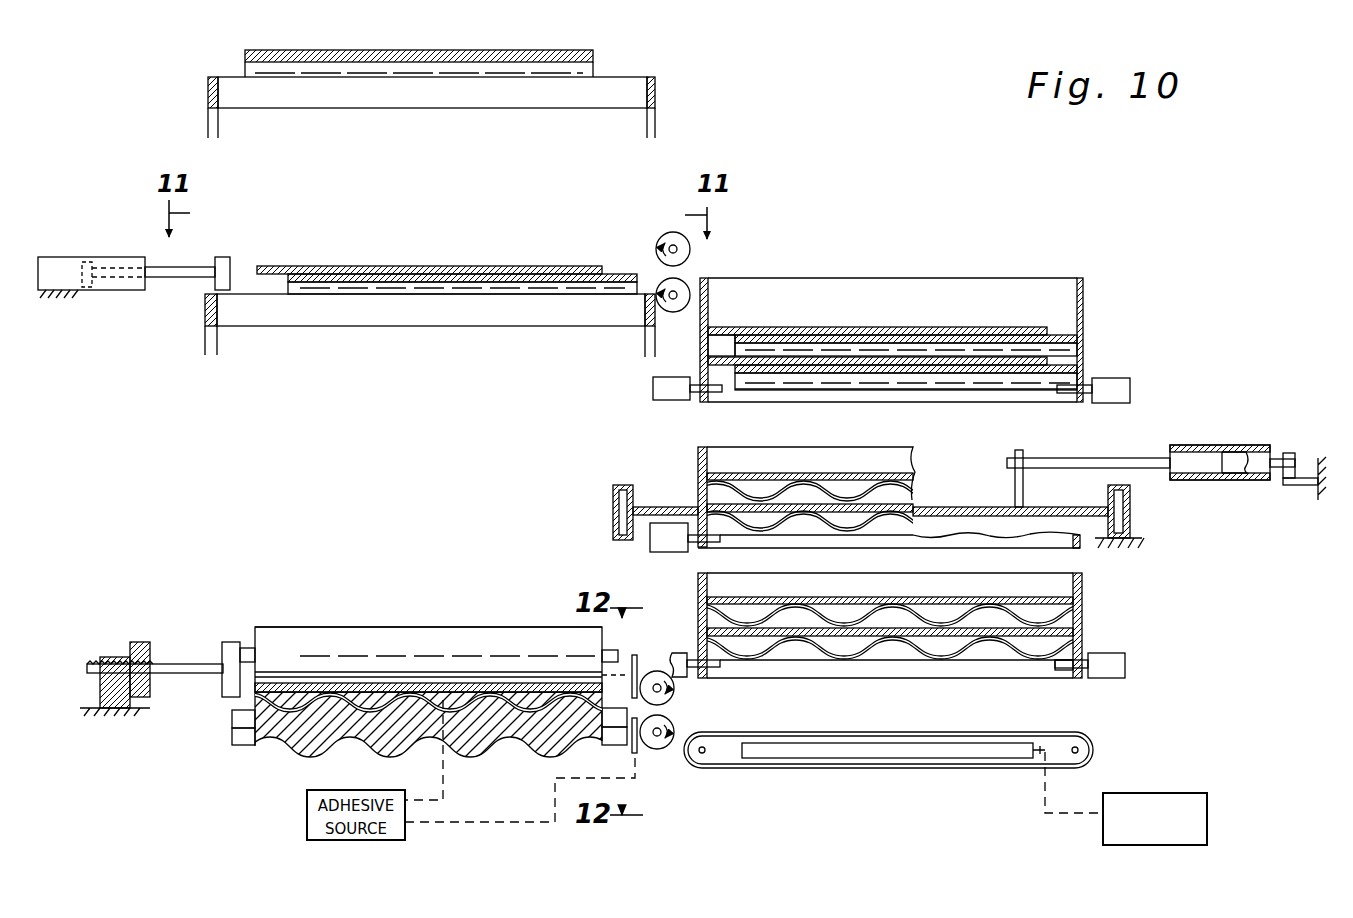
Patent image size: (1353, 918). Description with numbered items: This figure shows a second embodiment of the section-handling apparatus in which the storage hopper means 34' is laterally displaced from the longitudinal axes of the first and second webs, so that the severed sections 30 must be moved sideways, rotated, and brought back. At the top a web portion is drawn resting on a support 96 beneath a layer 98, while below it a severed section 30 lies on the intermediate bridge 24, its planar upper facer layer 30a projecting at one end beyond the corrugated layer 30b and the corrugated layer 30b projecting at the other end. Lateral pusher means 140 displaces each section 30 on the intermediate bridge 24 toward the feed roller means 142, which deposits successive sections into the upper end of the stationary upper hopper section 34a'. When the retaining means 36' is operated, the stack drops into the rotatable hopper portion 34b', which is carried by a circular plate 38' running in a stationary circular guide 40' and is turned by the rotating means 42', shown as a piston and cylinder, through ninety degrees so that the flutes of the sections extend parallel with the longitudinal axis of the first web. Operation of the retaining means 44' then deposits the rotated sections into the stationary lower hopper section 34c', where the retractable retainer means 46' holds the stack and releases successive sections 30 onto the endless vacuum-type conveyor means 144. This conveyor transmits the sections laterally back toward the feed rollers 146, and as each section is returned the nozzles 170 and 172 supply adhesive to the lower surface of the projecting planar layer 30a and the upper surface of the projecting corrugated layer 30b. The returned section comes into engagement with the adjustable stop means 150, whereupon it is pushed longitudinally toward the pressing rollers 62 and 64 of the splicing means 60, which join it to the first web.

The web sheet 98 is at (437, 50).
The support platen 96 is at (655, 97).
The lateral pusher means 140 is at (68, 258).
The intermediate bridge 24 is at (201, 314).
The planar upper facer layer 30a is at (277, 266).
The corrugated layer 30b is at (450, 274).
The severed section 30 is at (553, 265).
The feed roller means 142 is at (705, 257).
The storage hopper means 34' is at (891, 313).
The stationary upper hopper section 34a' is at (937, 337).
The retaining means 36' is at (921, 379).
The rotatable hopper portion 34b' is at (866, 491).
The circular plate 38' is at (860, 507).
The retaining means 44' is at (683, 553).
The stationary circular guide 40' is at (1103, 499).
The rotating means 42' is at (1166, 454).
The splicing means 60 is at (287, 625).
The pressing roller 62 is at (397, 628).
The adjustable stop means 150 is at (228, 641).
The pressing roller 64 is at (290, 745).
The nozzle 172 is at (639, 664).
The nozzle 170 is at (632, 748).
The feed rollers 146 is at (657, 750).
The endless vacuum-type conveyor means 144 is at (980, 768).
The stationary lower hopper section 34c' is at (938, 625).
The retractable retainer means 46' is at (937, 665).